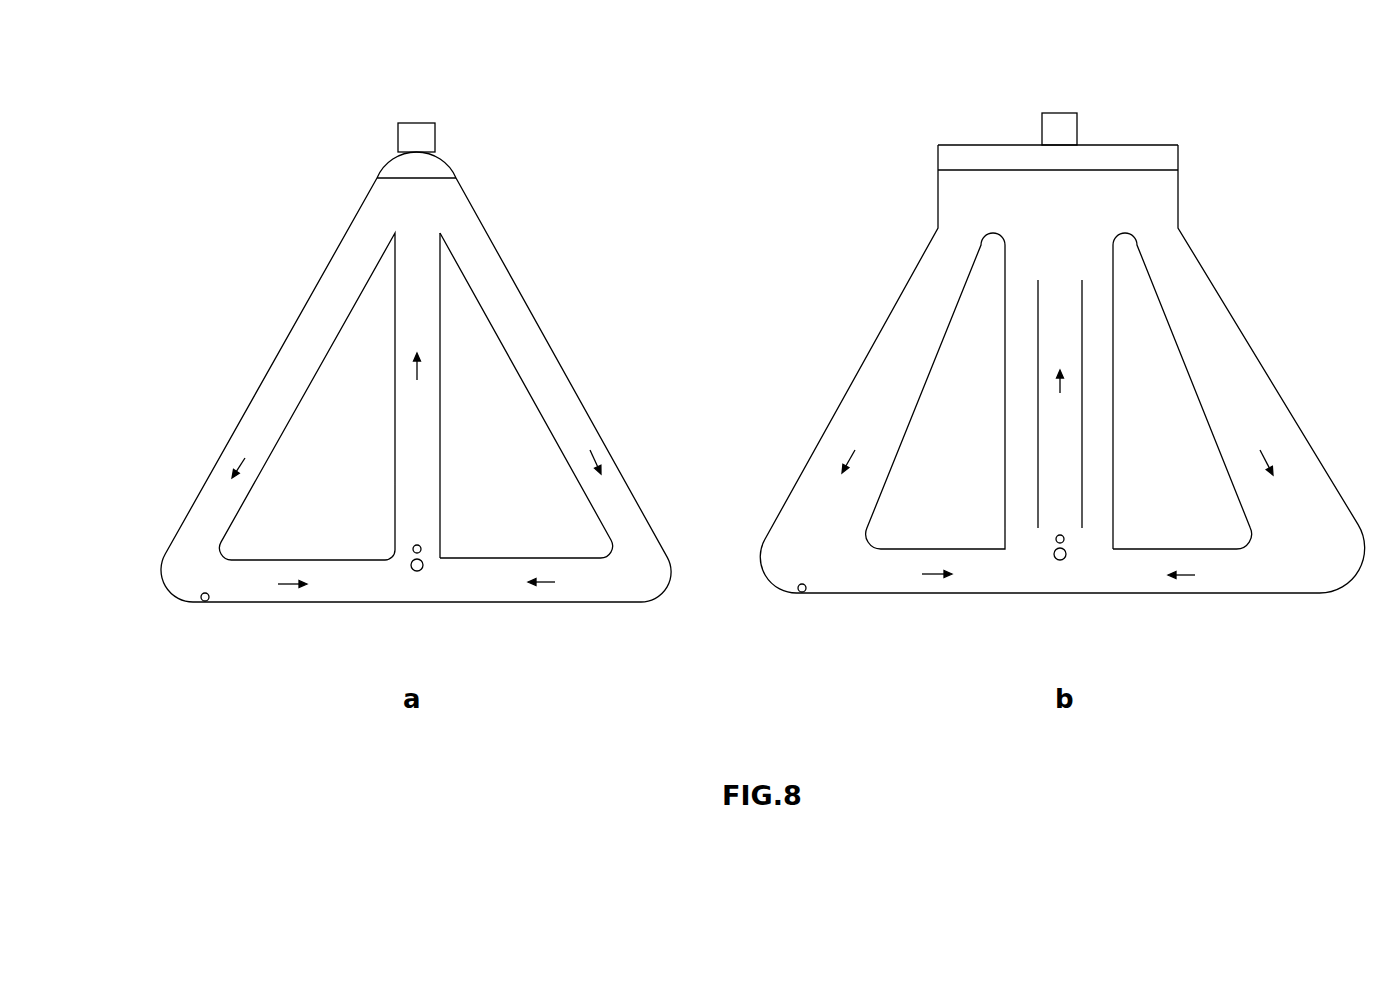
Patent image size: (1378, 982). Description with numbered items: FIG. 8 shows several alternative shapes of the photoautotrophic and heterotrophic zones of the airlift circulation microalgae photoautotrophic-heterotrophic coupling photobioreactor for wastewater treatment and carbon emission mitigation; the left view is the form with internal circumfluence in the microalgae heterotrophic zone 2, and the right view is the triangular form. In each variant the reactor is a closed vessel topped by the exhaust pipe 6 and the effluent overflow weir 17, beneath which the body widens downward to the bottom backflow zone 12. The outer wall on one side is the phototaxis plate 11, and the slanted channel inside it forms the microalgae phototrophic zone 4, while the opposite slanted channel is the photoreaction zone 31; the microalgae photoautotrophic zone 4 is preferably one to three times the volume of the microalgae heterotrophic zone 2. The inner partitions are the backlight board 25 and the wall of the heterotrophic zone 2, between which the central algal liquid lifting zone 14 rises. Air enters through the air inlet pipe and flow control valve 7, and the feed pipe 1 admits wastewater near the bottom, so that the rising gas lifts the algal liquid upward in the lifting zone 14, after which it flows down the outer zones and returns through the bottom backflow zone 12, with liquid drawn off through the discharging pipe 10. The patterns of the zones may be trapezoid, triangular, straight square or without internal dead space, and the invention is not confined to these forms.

The feed pipe 1 is at (421, 548).
The microalgae heterotrophic zone 2 is at (441, 461).
The microalgae phototrophic zone 4 is at (542, 353).
The exhaust pipe 6 is at (426, 134).
The air inlet pipe and flow control valve 7 is at (421, 569).
The discharging pipe 10 is at (208, 600).
The phototaxis plate 11 is at (586, 397).
The bottom backflow zone 12 is at (345, 603).
The algal liquid lifting zone 14 is at (417, 405).
The effluent overflow weir 17 is at (405, 173).
The backlight board 25 is at (276, 445).
The photoreaction zone 31 is at (298, 352).